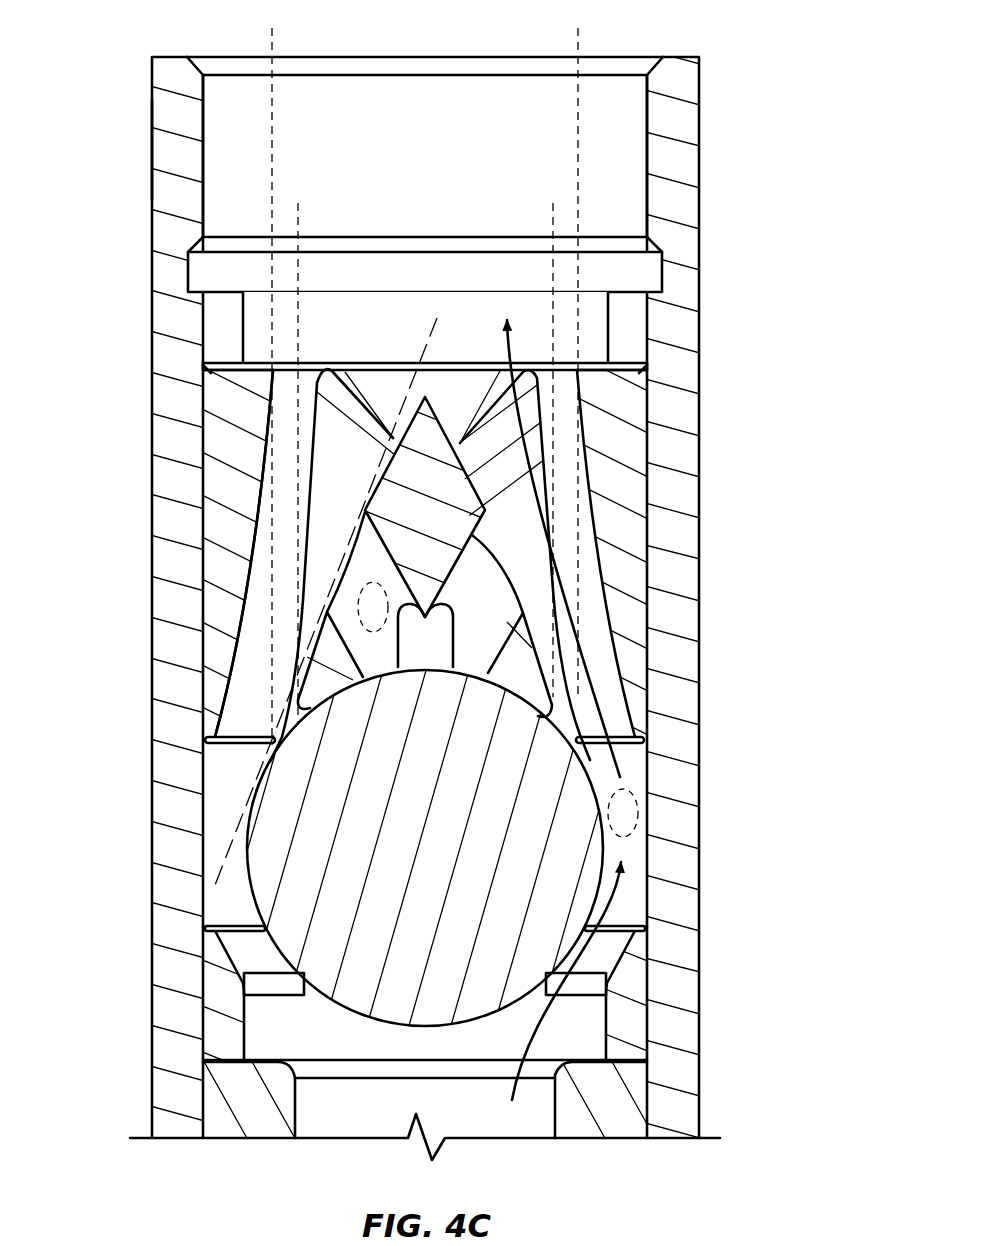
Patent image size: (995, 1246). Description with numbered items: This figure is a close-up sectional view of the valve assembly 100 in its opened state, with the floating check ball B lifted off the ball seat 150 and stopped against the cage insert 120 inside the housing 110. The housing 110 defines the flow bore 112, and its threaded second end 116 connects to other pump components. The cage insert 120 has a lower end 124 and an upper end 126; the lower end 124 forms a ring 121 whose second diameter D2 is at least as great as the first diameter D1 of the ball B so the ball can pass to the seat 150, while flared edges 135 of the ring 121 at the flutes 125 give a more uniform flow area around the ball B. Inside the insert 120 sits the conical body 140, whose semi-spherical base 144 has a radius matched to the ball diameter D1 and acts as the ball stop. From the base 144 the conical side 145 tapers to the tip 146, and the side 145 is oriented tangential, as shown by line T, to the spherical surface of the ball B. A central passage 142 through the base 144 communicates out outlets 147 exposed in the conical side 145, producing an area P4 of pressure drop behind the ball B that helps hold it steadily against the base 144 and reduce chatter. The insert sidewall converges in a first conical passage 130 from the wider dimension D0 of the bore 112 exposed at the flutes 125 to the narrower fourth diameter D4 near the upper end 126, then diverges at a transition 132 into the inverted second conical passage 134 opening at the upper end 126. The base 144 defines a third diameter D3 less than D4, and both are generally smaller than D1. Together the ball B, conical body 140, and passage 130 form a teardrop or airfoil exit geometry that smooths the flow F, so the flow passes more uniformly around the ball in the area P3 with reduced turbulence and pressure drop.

The valve assembly 100 is at (728, 80).
The housing 110 is at (167, 188).
The flow bore 112 is at (607, 90).
The second end 116 is at (152, 142).
The cage insert 120 is at (218, 483).
The ring 121 is at (640, 1000).
The lower end 124 is at (637, 1062).
The flutes 125 is at (228, 745).
The upper end 126 is at (232, 362).
The first conical passage 130 is at (268, 434).
The transition 132 is at (460, 443).
The second conical passage 134 is at (448, 378).
The edges 135 is at (618, 960).
The conical body 140 is at (485, 498).
The central passage 142 is at (450, 618).
The base 144 is at (588, 732).
The conical side 145 is at (527, 667).
The tip 146 is at (432, 384).
The outlets 147 is at (510, 609).
The ball seat 150 is at (235, 1096).
The floating check ball B is at (290, 938).
The tangent line T is at (345, 563).
The flow F is at (626, 884).
The area of uniform flow P3 is at (639, 813).
The area of pressure drop P4 is at (357, 617).
The wider dimension D0 is at (646, 903).
The first diameter D1 is at (602, 848).
The second diameter D2 is at (607, 1043).
The third diameter D3 is at (552, 203).
The fourth diameter D4 is at (577, 28).